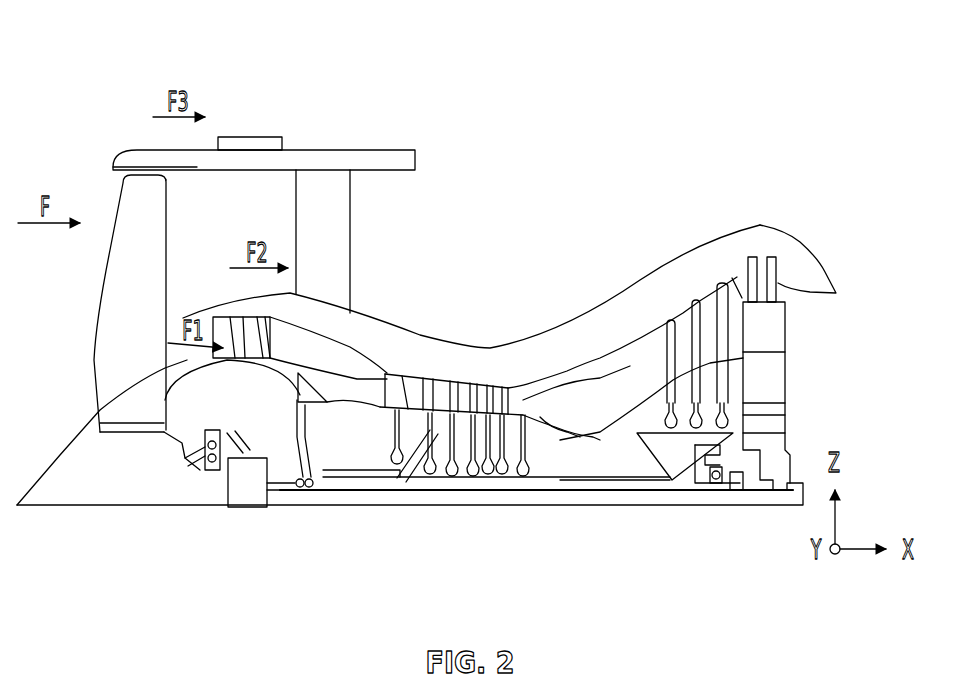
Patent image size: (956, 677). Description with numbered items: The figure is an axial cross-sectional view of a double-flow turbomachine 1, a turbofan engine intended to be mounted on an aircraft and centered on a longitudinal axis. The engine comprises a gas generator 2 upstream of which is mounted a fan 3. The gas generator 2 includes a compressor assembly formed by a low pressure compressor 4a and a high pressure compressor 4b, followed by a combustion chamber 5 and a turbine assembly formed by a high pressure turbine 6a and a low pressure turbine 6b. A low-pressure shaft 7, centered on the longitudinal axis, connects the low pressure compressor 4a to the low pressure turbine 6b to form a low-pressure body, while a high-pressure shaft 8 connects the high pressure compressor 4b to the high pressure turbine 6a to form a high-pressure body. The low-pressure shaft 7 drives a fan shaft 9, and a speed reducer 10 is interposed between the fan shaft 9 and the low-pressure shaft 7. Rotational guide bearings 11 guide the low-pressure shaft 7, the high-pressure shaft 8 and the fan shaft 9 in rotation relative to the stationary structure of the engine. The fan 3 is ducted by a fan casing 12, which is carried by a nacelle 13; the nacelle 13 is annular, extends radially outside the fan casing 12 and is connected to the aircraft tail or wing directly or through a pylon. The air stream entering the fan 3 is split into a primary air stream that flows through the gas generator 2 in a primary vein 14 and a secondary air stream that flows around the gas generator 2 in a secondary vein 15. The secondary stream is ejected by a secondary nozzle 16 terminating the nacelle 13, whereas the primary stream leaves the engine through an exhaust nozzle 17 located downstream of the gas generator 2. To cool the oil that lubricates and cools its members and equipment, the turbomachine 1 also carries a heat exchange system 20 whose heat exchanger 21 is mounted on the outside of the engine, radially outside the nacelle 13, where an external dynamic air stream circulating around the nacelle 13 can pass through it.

The double-flow turbomachine 1 is at (555, 272).
The gas generator 2 is at (492, 520).
The fan 3 is at (88, 292).
The low pressure compressor 4a is at (293, 490).
The high pressure compressor 4b is at (445, 450).
The combustion chamber 5 is at (575, 407).
The high pressure turbine 6a is at (740, 433).
The low pressure turbine 6b is at (745, 320).
The low-pressure shaft 7 is at (368, 491).
The high-pressure shaft 8 is at (632, 491).
The fan shaft 9 is at (200, 472).
The speed reducer 10 is at (257, 477).
The rotational guide bearings 11 is at (203, 467).
The fan casing 12 is at (167, 163).
The nacelle 13 is at (300, 150).
The primary vein 14 is at (320, 373).
The secondary vein 15 is at (204, 193).
The secondary nozzle 16 is at (415, 158).
The exhaust nozzle 17 is at (820, 264).
The heat exchange system 20 is at (252, 122).
The heat exchanger 21 is at (273, 137).